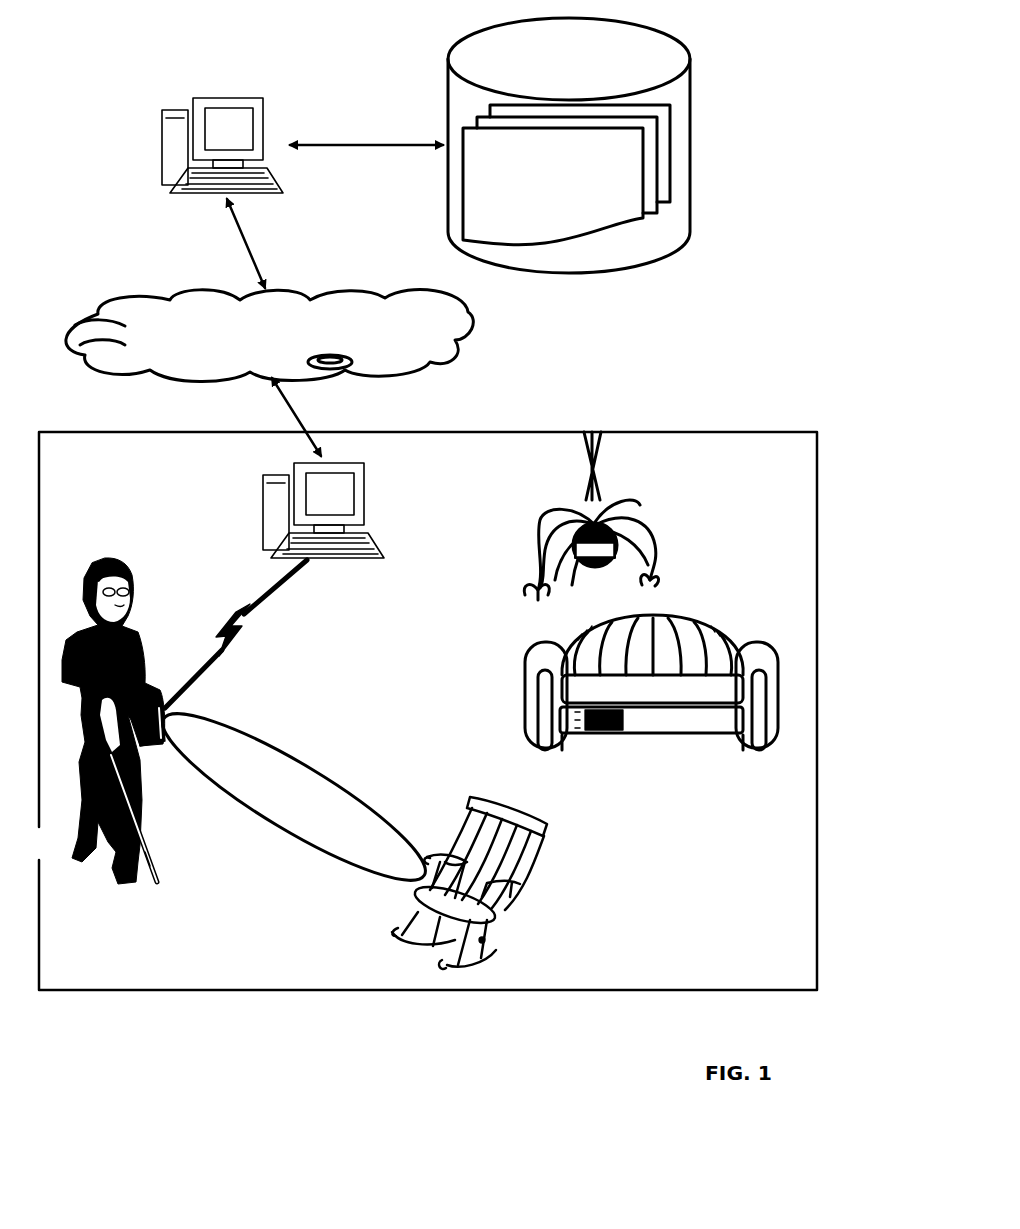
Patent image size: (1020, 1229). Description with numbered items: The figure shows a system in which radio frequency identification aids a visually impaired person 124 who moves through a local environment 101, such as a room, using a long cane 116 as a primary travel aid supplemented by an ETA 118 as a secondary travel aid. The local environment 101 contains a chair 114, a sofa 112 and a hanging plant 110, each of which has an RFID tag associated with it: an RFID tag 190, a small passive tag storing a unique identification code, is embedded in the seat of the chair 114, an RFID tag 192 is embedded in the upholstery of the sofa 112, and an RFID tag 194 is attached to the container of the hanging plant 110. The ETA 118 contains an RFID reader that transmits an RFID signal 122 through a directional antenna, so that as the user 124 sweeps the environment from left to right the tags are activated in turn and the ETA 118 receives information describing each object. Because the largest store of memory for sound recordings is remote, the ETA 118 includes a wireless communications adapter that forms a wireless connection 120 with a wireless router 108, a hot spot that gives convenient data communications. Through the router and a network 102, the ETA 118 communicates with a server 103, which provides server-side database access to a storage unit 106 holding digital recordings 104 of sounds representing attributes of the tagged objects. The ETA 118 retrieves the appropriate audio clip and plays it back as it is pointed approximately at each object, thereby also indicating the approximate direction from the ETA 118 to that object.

The local environment 101 is at (372, 1012).
The network 102 is at (317, 331).
The server 103 is at (287, 86).
The recordings of sounds 104 is at (597, 188).
The storage unit 106 is at (695, 321).
The wireless router 108 is at (480, 518).
The hanging plant 110 is at (737, 490).
The sofa 112 is at (750, 786).
The chair 114 is at (627, 891).
The long cane 116 is at (227, 893).
The ETA 118 is at (165, 712).
The wireless connection 120 is at (380, 650).
The RFID signal 122 is at (297, 767).
The visually impaired person 124 is at (188, 528).
The RFID tag 190 is at (482, 940).
The RFID tag 192 is at (603, 734).
The RFID tag 194 is at (605, 562).